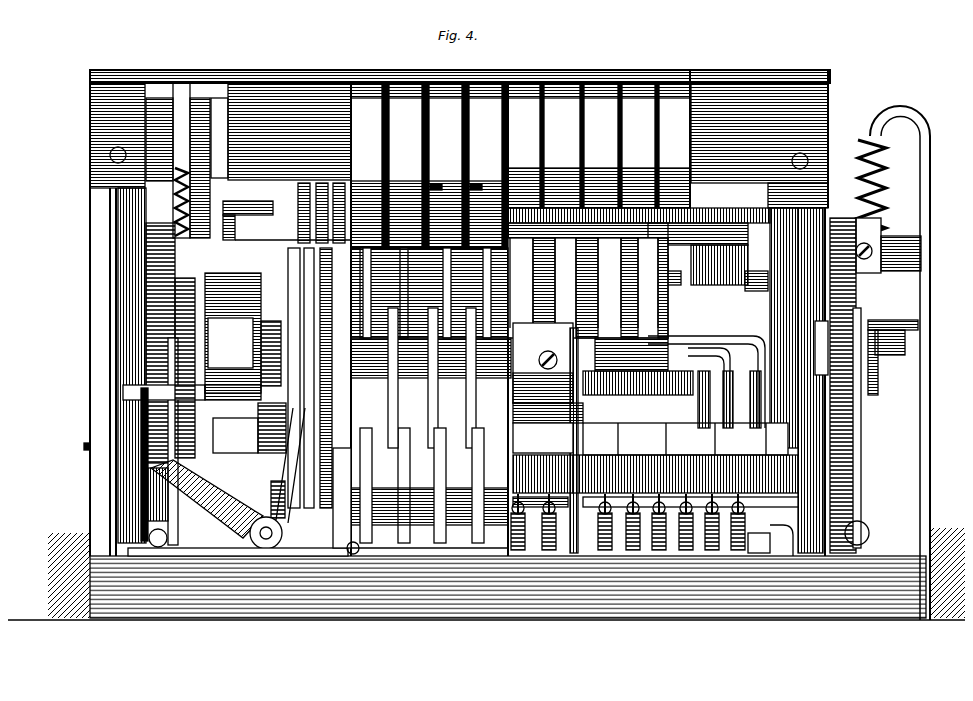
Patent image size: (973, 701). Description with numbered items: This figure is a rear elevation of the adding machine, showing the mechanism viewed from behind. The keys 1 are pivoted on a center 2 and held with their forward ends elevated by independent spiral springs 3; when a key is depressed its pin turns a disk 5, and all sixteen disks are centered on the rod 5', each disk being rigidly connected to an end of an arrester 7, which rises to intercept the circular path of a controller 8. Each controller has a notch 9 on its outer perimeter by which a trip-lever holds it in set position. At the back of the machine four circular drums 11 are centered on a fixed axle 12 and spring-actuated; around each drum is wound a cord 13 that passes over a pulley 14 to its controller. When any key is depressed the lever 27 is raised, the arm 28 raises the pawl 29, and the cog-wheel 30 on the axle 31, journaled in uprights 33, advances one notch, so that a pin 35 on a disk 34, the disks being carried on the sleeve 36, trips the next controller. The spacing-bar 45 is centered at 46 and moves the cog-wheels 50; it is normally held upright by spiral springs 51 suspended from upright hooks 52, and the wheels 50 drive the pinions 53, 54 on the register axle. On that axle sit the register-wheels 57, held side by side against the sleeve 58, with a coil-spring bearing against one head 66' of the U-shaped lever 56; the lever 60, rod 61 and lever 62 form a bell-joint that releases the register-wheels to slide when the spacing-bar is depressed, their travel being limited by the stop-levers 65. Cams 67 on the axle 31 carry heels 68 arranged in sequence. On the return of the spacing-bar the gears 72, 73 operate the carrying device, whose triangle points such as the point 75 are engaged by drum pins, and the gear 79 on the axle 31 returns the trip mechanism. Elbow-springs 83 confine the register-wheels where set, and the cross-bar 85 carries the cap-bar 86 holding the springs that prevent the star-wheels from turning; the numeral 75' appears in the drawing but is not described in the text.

The key 1 is at (903, 314).
The center 2 is at (325, 492).
The spiral spring 3 is at (528, 545).
The disk 5 is at (582, 345).
The rod 5' is at (78, 458).
The arrester 7 is at (212, 408).
The controller 8 is at (429, 319).
The notch 9 is at (466, 180).
The circular drum 11 is at (429, 488).
The fixed axle 12 is at (327, 473).
The cord 13 is at (395, 240).
The pulley 14 is at (352, 240).
The lever 27 is at (685, 474).
The arm 28 is at (569, 481).
The pawl 29 is at (550, 427).
The cog-wheel 30 is at (588, 320).
The axle 31 is at (230, 343).
The upright 33 is at (343, 537).
The disk 34 is at (440, 378).
The pin 35 is at (560, 552).
The hollow axle or sleeve 36 is at (431, 378).
The spacing-bar 45 is at (852, 492).
The center 46 is at (863, 520).
The cog-wheel 50 is at (856, 447).
The spiral spring 51 is at (875, 190).
The upright hook 52 is at (903, 100).
The pinion 53 is at (840, 216).
The pinion 54 is at (135, 250).
The U-shaped lever 56 is at (700, 204).
The register-wheel 57 is at (663, 302).
The sleeve 58 is at (657, 270).
The lever 60 is at (273, 477).
The rod or shaft 61 is at (295, 473).
The lever 62 is at (215, 512).
The stop-lever 65 is at (327, 173).
The head 66' is at (729, 277).
The cam 67 is at (283, 357).
The heel or projection 68 is at (283, 322).
The gear 72 is at (206, 190).
The gear 73 is at (230, 310).
The point 75 is at (104, 464).
The rod 75' is at (217, 147).
The gear 79 is at (201, 368).
The elbow-spring 83 is at (599, 139).
The cross-bar 85 is at (289, 131).
The cap-bar 86 is at (615, 66).